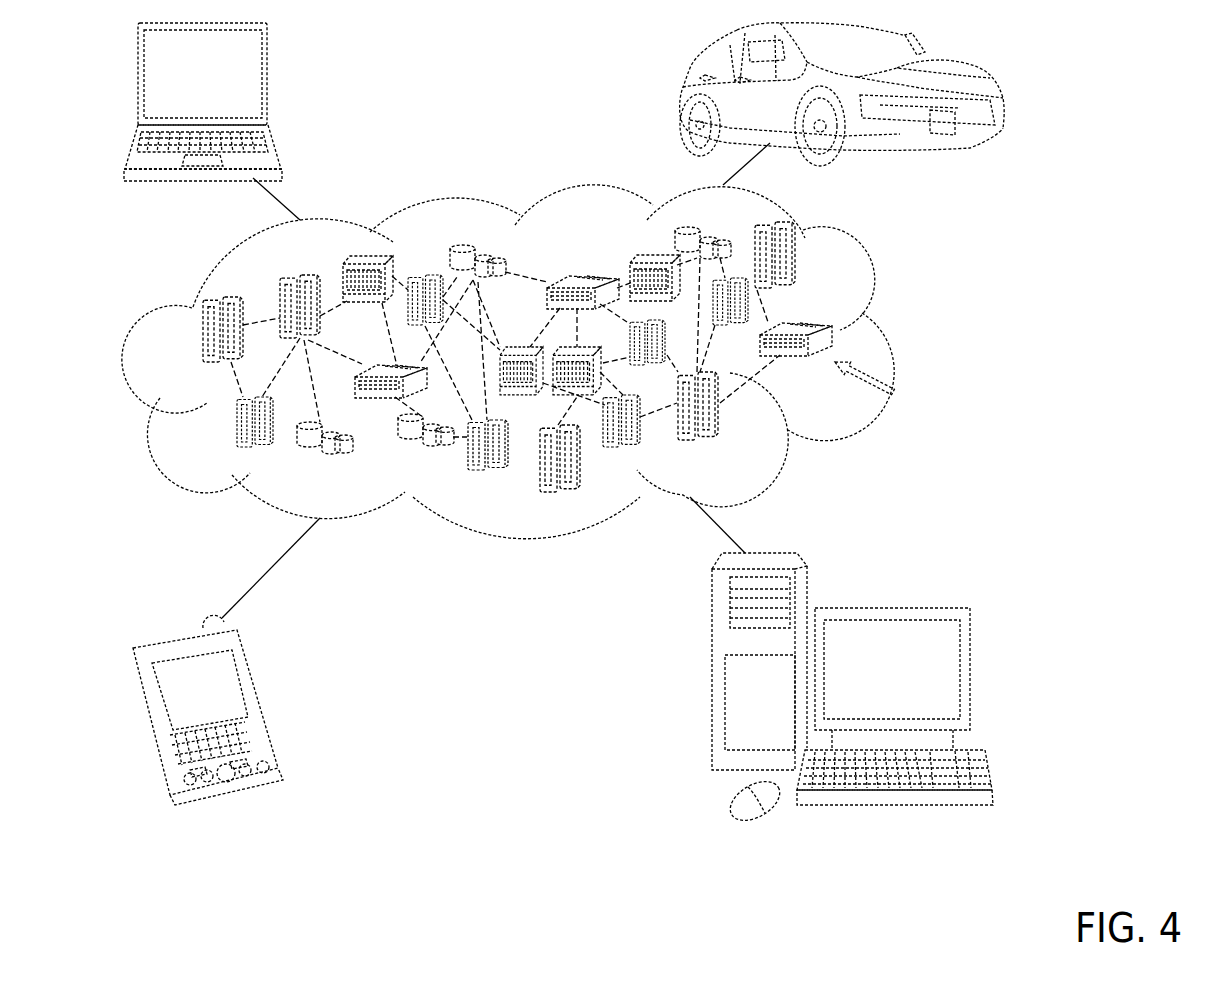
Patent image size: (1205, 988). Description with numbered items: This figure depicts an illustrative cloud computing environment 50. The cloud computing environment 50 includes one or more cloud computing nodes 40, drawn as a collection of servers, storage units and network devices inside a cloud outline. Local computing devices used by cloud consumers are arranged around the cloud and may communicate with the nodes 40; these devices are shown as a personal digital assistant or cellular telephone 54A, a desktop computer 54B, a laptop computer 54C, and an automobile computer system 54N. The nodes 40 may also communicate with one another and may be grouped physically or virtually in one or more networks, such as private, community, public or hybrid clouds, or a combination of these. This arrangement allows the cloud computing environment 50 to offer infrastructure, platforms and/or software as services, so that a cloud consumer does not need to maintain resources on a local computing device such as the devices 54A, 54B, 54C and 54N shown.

The cloud computing nodes 40 is at (882, 386).
The cloud computing environment 50 is at (890, 338).
The personal digital assistant or cellular telephone 54A is at (262, 698).
The desktop computer 54B is at (891, 608).
The laptop computer 54C is at (267, 81).
The automobile computer system 54N is at (680, 96).